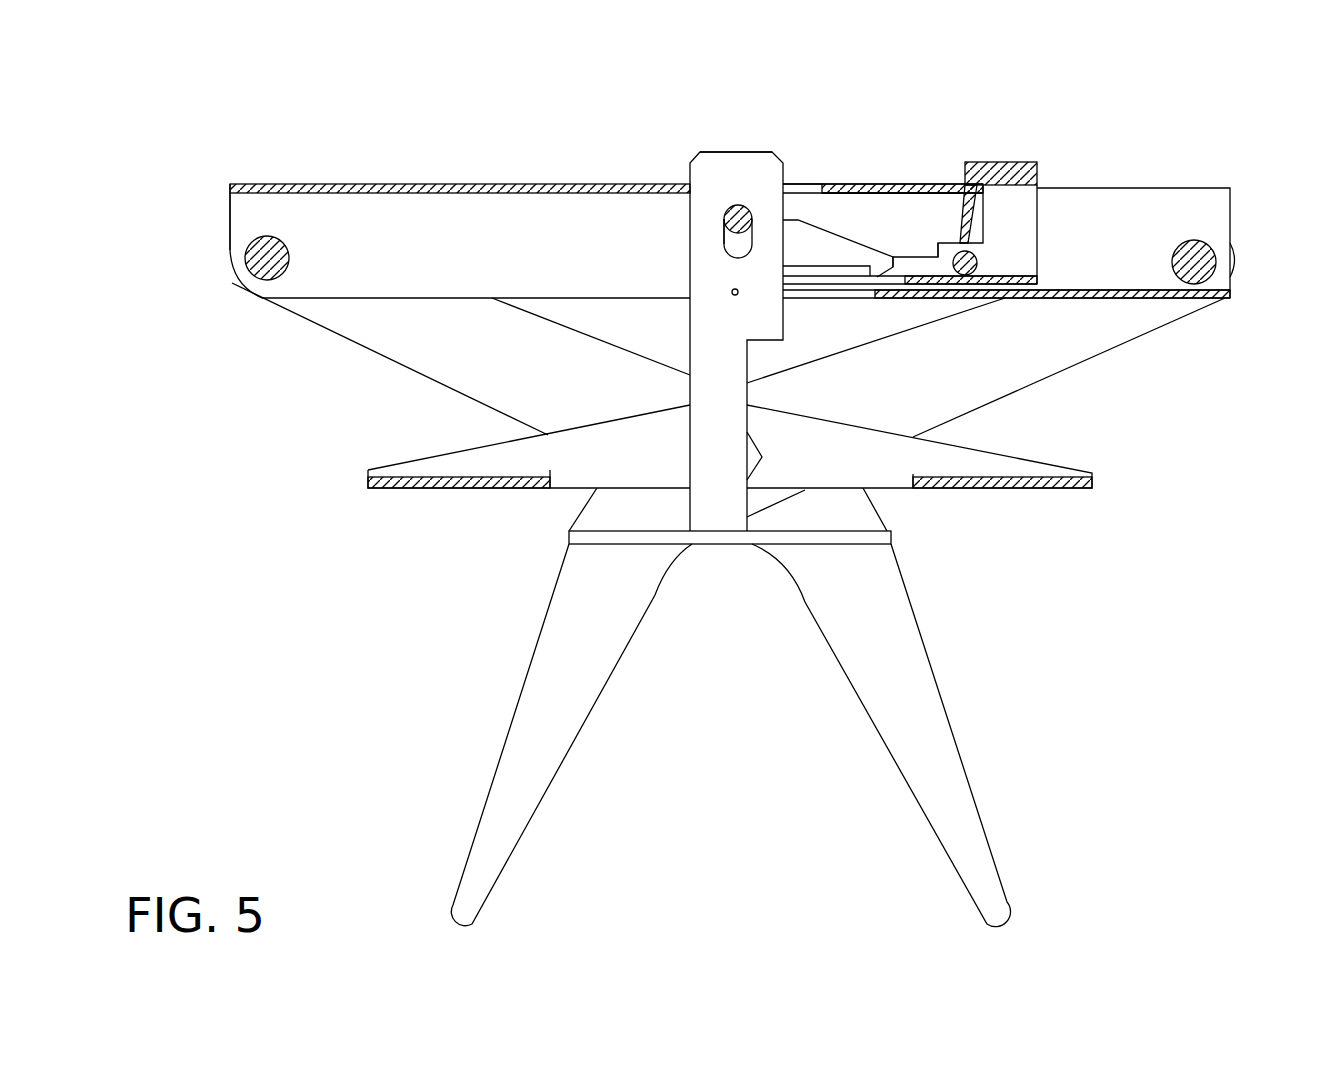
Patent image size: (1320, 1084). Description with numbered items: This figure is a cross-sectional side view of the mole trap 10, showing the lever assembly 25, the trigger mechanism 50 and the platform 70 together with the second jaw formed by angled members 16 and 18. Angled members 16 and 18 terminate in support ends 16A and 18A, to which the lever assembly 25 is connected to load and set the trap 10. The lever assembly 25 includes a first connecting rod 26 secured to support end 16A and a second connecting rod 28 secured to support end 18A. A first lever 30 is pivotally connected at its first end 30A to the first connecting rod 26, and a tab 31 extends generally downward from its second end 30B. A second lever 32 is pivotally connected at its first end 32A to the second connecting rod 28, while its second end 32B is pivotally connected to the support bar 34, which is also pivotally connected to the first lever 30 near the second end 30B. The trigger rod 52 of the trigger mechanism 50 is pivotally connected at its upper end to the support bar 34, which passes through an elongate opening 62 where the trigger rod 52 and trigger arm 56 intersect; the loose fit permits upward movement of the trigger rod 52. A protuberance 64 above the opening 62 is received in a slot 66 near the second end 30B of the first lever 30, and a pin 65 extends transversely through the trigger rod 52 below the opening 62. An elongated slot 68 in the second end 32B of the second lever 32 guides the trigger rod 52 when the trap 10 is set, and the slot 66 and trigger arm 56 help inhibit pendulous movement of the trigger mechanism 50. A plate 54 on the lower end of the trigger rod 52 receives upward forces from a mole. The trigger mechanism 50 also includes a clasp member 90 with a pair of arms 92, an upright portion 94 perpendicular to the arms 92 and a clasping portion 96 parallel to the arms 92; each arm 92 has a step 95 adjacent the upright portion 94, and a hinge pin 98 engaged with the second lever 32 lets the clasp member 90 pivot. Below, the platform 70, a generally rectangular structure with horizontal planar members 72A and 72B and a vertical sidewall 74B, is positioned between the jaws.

The mole trap 10 is at (235, 112).
The lever assembly 25 is at (515, 140).
The first lever 30 is at (415, 183).
The first end of first lever 30A is at (300, 183).
The second end of first lever 30B is at (888, 184).
The first connecting rod 26 is at (262, 252).
The angled member 16 is at (523, 368).
The support end of angled member 16A is at (343, 327).
The angled member 18 is at (985, 384).
The support end of angled member 18A is at (1115, 318).
The trigger rod 52 is at (703, 348).
The protuberance 64 is at (757, 152).
The support bar 34 is at (740, 205).
The opening 62 is at (727, 235).
The pin 65 is at (732, 291).
The slot 66 is at (800, 186).
The trigger arm 56 is at (823, 227).
The elongated slot 68 is at (795, 300).
The second end of second lever 32B is at (800, 284).
The first end of second lever 32A is at (1183, 300).
The second lever 32 is at (1120, 188).
The second connecting rod 28 is at (1198, 245).
The clasp member 90 is at (1023, 127).
The clasping portion 96 is at (1025, 162).
The upright portion 94 is at (1023, 215).
The tab 31 is at (942, 238).
The hinge pin 98 is at (977, 258).
The step 95 is at (913, 240).
The arms 92 is at (863, 272).
The platform 70 is at (1085, 459).
The vertical sidewall 74B is at (855, 437).
The horizontal planar member 72B is at (413, 478).
The horizontal planar member 72A is at (1003, 477).
The plate 54 is at (756, 544).
The trigger mechanism 50 is at (730, 556).